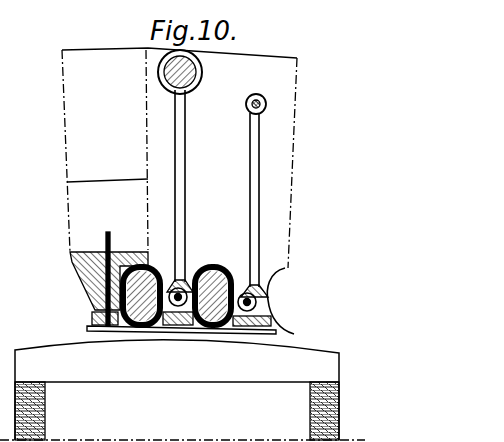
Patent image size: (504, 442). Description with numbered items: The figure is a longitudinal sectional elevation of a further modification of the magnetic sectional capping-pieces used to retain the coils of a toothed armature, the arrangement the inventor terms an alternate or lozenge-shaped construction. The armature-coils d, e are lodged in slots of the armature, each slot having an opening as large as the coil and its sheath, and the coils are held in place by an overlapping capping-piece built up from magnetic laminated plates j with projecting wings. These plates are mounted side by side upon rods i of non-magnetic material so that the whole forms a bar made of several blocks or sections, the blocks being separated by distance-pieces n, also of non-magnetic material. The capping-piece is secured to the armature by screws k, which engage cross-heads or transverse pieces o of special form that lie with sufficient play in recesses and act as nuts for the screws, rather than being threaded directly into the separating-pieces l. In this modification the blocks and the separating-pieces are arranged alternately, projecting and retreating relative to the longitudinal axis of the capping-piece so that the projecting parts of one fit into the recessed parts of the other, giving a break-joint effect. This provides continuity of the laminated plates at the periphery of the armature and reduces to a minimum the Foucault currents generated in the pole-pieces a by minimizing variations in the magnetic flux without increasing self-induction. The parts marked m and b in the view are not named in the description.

The frame section m is at (97, 148).
The cross bar b is at (108, 166).
The separating-pieces l is at (185, 225).
The cross-heads o is at (184, 289).
The screws k is at (108, 290).
The armature-coil d is at (177, 296).
The armature-coil e is at (152, 268).
The distance-pieces n is at (95, 320).
The rods i is at (123, 330).
The magnetic laminated plates j is at (280, 301).
The pole-pieces a is at (177, 390).